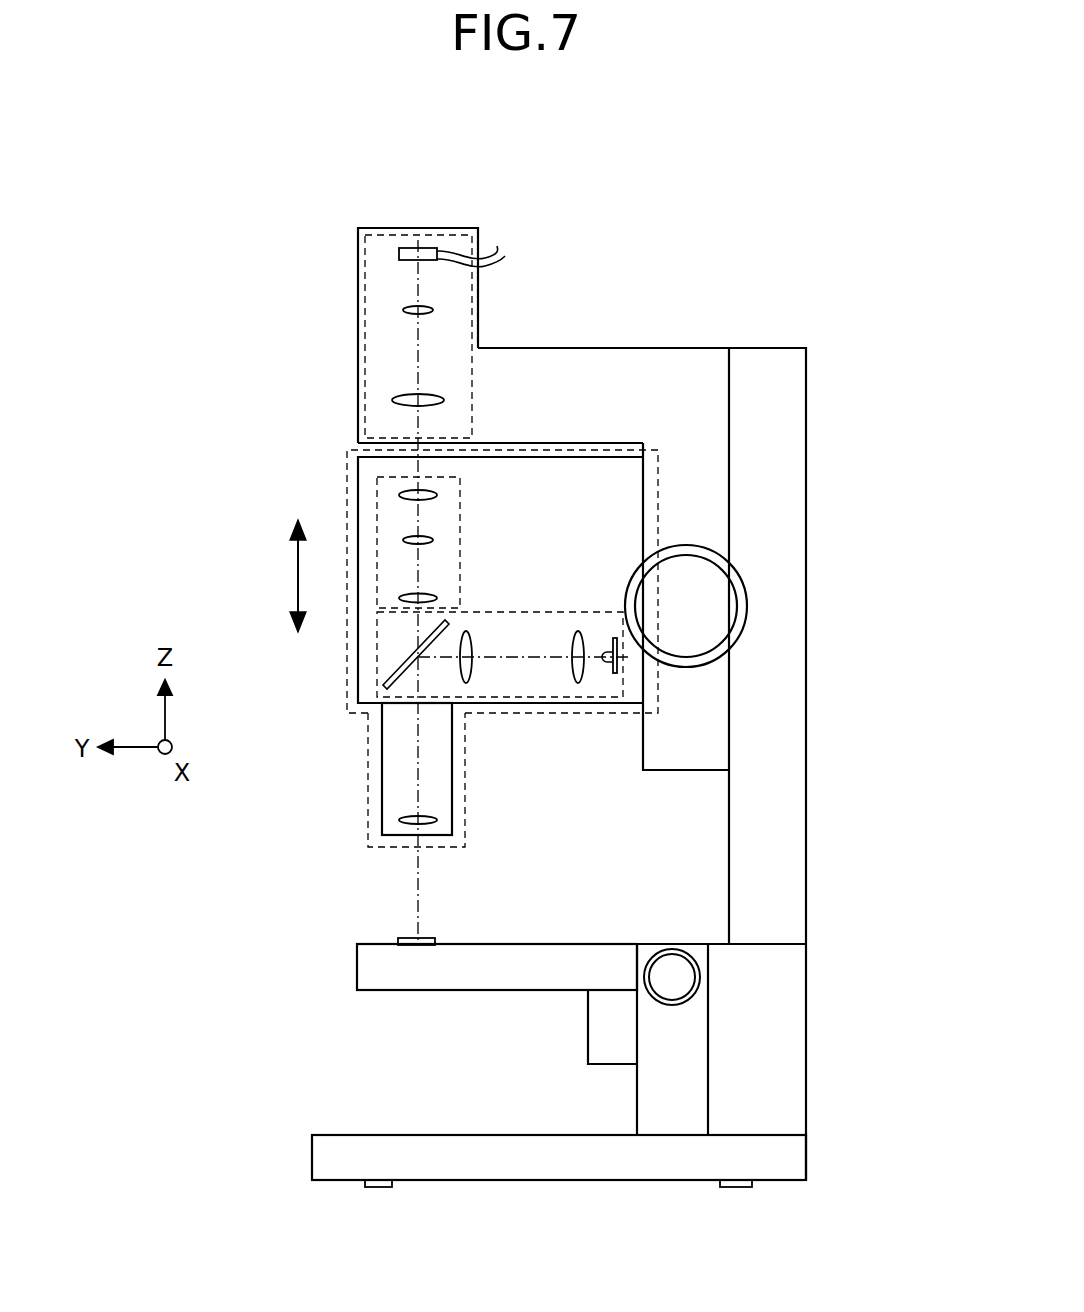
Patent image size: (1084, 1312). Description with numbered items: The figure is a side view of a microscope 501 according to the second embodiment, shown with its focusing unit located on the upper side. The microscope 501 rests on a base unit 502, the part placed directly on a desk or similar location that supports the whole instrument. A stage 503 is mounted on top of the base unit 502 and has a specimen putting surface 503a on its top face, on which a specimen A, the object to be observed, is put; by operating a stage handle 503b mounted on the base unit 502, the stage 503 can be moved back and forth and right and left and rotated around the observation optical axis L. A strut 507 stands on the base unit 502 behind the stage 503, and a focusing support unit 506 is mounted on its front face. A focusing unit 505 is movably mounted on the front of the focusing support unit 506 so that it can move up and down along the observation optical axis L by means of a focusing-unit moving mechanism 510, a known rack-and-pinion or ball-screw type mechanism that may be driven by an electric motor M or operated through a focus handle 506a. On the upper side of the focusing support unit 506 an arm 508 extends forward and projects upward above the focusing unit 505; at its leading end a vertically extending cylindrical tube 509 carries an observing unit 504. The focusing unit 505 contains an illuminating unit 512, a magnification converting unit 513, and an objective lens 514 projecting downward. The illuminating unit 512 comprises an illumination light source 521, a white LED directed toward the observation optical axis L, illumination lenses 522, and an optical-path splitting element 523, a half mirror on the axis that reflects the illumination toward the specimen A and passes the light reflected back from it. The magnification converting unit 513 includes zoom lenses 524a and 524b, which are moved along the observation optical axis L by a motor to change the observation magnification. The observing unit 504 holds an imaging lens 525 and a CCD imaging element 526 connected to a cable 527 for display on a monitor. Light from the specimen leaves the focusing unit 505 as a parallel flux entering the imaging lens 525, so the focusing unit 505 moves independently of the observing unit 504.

The microscope 501 is at (812, 272).
The base unit 502 is at (607, 1168).
The stage 503 is at (372, 973).
The specimen putting surface 503a is at (398, 942).
The stage handle 503b is at (672, 977).
The observing unit 504 is at (356, 258).
The focusing unit 505 is at (345, 467).
The focusing support unit 506 is at (669, 326).
The focus handle 506a is at (703, 607).
The strut 507 is at (777, 626).
The arm 508 is at (603, 362).
The tube 509 is at (455, 323).
The focusing-unit moving mechanism 510 is at (652, 506).
The illuminating unit 512 is at (377, 695).
The magnification converting unit 513 is at (377, 568).
The objective lens 514 is at (392, 787).
The illumination light source 521 is at (607, 662).
The illumination lenses 522 is at (467, 683).
The optical-path splitting element 523 is at (400, 675).
The zoom lens 524a is at (409, 622).
The zoom lens 524b is at (400, 493).
The imaging lens 525 is at (395, 400).
The imaging element 526 is at (407, 247).
The cable 527 is at (455, 250).
The observation optical axis L is at (417, 868).
The specimen A is at (415, 937).
The electric motor M is at (703, 627).